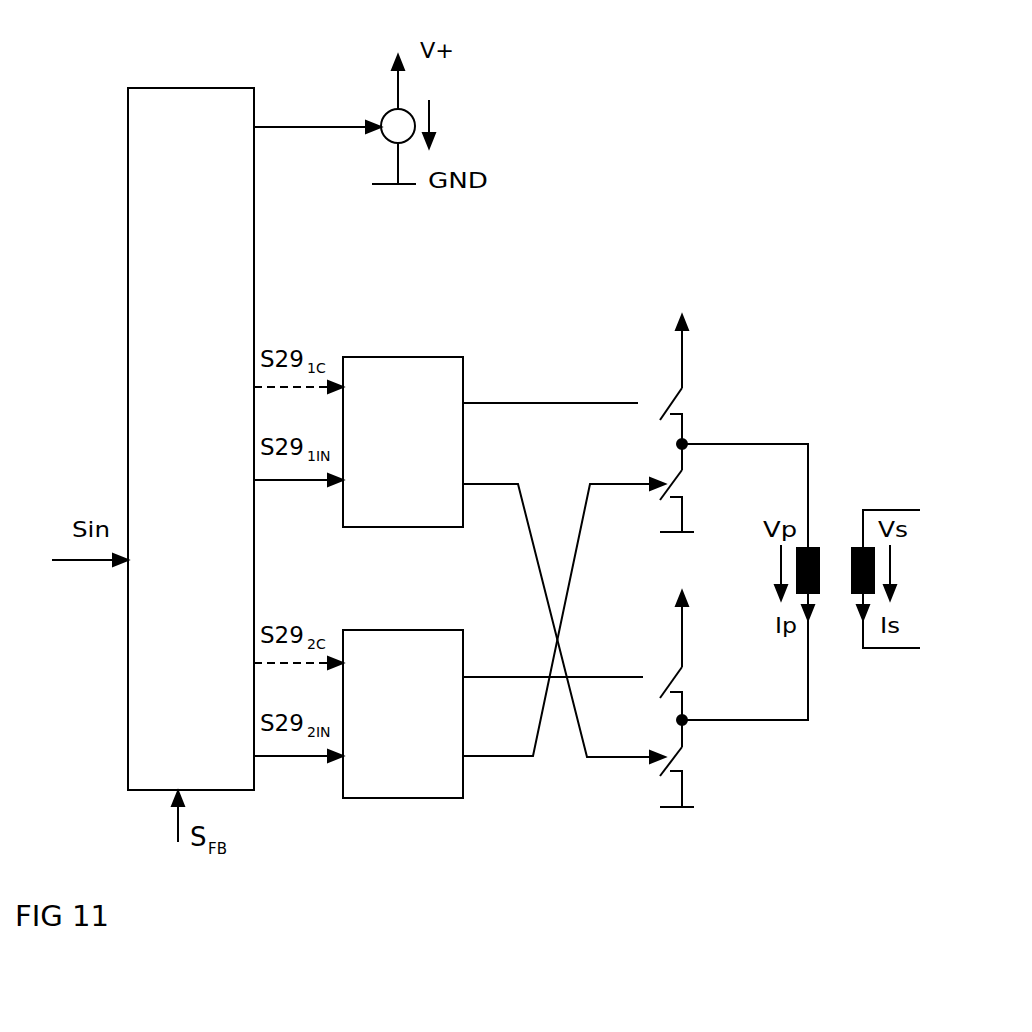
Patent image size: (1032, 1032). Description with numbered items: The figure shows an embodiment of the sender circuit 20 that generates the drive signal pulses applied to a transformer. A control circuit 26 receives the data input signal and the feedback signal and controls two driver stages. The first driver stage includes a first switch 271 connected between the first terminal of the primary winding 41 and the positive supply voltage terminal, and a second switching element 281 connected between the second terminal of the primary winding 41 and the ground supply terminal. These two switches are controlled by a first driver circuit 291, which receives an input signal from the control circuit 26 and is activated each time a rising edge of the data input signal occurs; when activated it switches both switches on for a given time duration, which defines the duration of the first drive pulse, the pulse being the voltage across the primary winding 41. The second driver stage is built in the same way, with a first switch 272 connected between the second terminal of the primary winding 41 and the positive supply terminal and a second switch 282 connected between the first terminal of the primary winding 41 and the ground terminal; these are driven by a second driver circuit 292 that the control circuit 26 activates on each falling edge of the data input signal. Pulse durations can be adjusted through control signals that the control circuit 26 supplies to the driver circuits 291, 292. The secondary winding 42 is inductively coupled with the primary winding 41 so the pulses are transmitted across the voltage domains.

The control circuit 26 is at (170, 88).
The sender circuit 20 is at (525, 312).
The first driver circuit 291 is at (403, 403).
The second driver circuit 292 is at (403, 676).
The first switch 271 is at (715, 379).
The first switch of the second driver stage 272 is at (715, 655).
The second switching element 281 is at (713, 763).
The second switch of the second driver stage 282 is at (713, 488).
The primary winding 41 is at (815, 545).
The secondary winding 42 is at (848, 610).